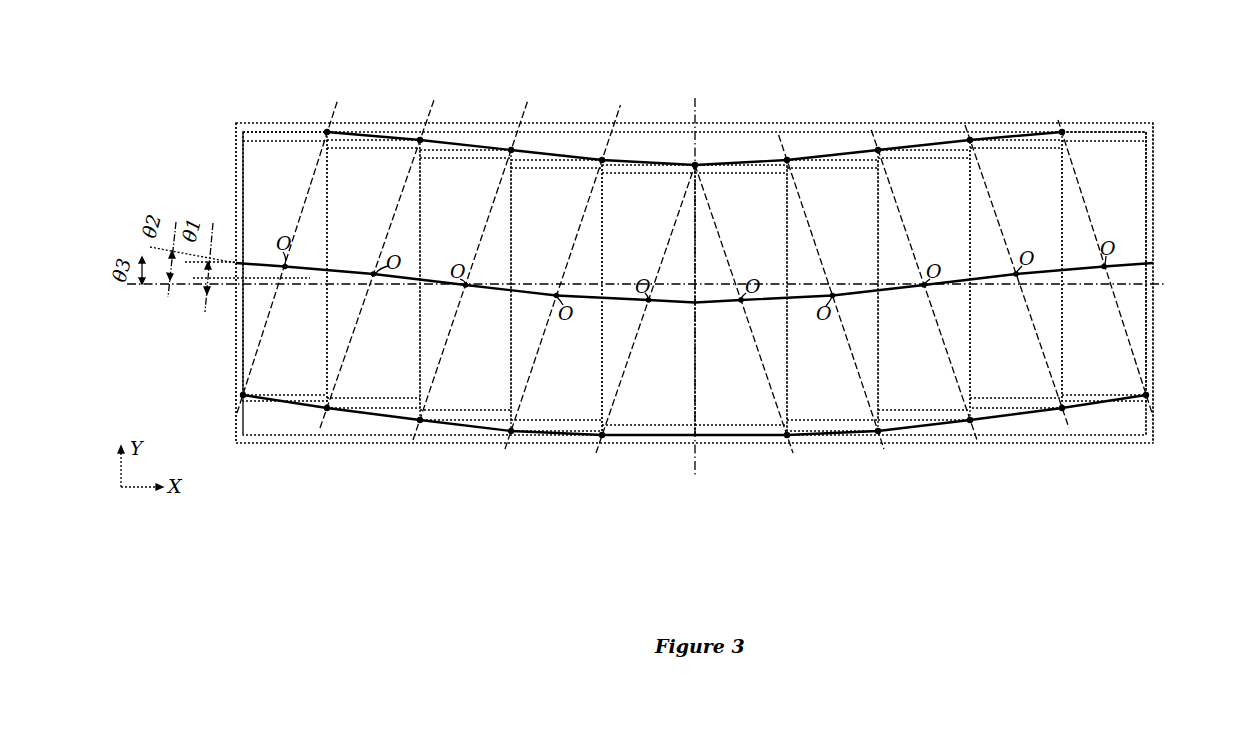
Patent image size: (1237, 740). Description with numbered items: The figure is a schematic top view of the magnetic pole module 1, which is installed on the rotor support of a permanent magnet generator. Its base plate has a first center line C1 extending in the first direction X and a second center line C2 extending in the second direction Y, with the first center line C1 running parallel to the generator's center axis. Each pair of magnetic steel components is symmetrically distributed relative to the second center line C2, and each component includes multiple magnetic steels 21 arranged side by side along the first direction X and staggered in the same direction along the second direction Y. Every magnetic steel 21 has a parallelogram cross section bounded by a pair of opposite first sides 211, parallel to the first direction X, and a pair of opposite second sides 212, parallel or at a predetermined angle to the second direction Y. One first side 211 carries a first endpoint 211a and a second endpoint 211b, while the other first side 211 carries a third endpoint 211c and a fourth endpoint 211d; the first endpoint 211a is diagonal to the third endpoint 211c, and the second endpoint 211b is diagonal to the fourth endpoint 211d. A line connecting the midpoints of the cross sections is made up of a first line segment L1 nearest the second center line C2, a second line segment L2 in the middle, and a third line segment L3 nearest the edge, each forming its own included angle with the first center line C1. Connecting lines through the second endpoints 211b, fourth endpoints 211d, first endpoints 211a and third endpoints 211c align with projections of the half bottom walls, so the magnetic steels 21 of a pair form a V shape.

The magnetic pole module 1 is at (697, 56).
The magnetic steel 21 is at (247, 180).
The first side 211 is at (276, 131).
The first endpoint 211a is at (1058, 120).
The second endpoint 211b is at (628, 105).
The third endpoint 211c is at (793, 453).
The fourth endpoint 211d is at (596, 453).
The second side 212 is at (237, 347).
The first line segment L1 is at (618, 298).
The second line segment L2 is at (418, 280).
The third line segment L3 is at (262, 266).
The first center line C1 is at (658, 300).
The second center line C2 is at (717, 287).